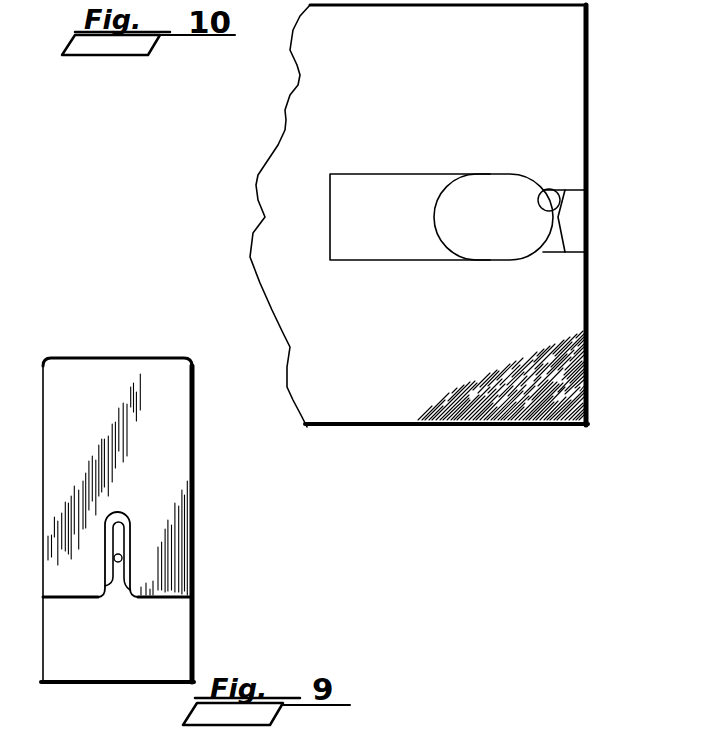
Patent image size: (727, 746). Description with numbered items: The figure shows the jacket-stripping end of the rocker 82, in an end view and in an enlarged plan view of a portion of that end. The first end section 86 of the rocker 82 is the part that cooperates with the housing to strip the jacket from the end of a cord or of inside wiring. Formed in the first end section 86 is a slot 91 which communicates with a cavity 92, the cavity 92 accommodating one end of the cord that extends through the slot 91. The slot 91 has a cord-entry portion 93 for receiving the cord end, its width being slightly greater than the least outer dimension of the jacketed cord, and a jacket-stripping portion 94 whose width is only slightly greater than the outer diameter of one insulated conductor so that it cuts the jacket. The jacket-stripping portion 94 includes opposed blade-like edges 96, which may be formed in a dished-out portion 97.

In FIG. 10, the rocker 82 is at (410, 425).
In FIG. 9, the rocker 82 is at (193, 430).
In FIG. 10, the first end section 86 is at (558, 82).
In FIG. 9, the slot 91 is at (127, 590).
In FIG. 10, the cavity 92 is at (392, 250).
In FIG. 9, the cord-entry portion 93 is at (120, 585).
In FIG. 9, the jacket-stripping portion 94 is at (124, 549).
In FIG. 10, the blade-like edges 96 is at (545, 188).
In FIG. 9, the dished-out portion 97 is at (121, 555).